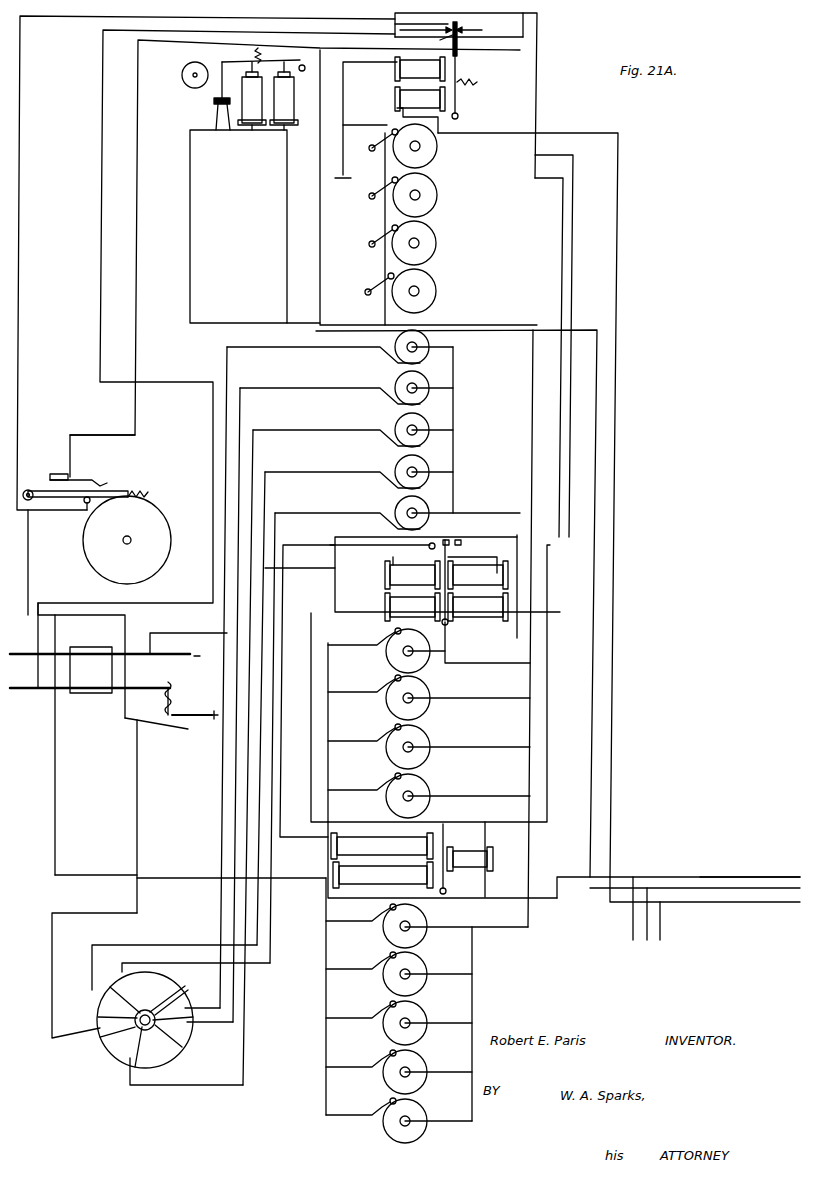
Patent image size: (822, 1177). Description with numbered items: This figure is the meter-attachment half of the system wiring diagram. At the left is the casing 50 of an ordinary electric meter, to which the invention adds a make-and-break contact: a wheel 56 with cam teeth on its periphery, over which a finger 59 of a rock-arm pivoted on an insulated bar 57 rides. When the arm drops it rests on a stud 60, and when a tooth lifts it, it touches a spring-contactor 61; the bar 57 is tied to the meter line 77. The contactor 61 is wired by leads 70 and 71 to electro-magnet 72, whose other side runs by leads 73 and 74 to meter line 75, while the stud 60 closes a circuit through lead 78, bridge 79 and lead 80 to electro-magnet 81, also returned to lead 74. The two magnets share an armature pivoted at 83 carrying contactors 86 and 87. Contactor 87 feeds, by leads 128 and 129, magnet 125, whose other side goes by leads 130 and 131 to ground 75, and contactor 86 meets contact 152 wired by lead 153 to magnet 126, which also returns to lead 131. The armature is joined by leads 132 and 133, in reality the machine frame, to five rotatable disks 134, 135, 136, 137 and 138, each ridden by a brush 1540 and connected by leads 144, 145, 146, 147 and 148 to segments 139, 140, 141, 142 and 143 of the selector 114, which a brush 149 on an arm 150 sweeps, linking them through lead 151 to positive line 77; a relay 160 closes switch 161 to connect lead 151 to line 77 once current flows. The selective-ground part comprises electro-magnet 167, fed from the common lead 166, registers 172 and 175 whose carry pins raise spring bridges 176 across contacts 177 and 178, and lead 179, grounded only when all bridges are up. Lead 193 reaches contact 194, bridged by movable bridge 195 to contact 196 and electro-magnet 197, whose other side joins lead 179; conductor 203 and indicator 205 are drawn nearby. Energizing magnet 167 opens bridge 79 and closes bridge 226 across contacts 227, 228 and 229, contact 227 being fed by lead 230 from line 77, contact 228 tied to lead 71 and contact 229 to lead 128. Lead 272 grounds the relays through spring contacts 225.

The casing of electric meter 50 is at (90, 693).
The wheel 56 is at (127, 537).
The insulated bar 57 is at (30, 488).
The finger 59 is at (130, 490).
The stud 60 is at (92, 503).
The spring-contactor 61 is at (88, 470).
The lead 70 is at (112, 432).
The lead 71 is at (540, 30).
The electro-magnet 72 is at (478, 589).
The lead 73 is at (513, 553).
The lead 74 is at (350, 570).
The meter line 75 is at (186, 656).
The meter line 77 is at (20, 690).
The lead 78 is at (18, 302).
The bridge 79 is at (479, 29).
The lead 80 is at (515, 153).
The electro-magnet 81 is at (412, 589).
The pivot 83 is at (449, 624).
The contactor 86 is at (447, 526).
The contactor 87 is at (458, 540).
The selector switch 114 is at (163, 1014).
The magnet 125 is at (470, 859).
The magnet 126 is at (442, 860).
The lead 128 is at (548, 720).
The lead 129 is at (530, 836).
The lead 130 is at (530, 882).
The lead 131 is at (270, 903).
The lead 132 is at (456, 420).
The lead 133 is at (455, 360).
The rotatable disk 134 is at (395, 505).
The rotatable disk 135 is at (395, 464).
The rotatable disk 136 is at (395, 422).
The rotatable disk 137 is at (395, 380).
The rotatable disk 138 is at (395, 338).
The segment 139 is at (132, 993).
The segment 140 is at (117, 1008).
The segment 141 is at (117, 1036).
The segment 142 is at (151, 1047).
The segment 143 is at (185, 1025).
The lead 144 is at (267, 950).
The lead 145 is at (267, 923).
The lead 146 is at (244, 1048).
The lead 147 is at (235, 997).
The lead 148 is at (220, 918).
The brush 149 is at (183, 990).
The arm 150 is at (168, 1002).
The lead 151 is at (80, 913).
The contact 152 is at (428, 548).
The lead 153 is at (300, 691).
The relay 160 is at (165, 680).
The switch 161 is at (165, 725).
The lead 166 is at (618, 203).
The electro-magnet 167 is at (395, 96).
The register 172 is at (432, 162).
The register 175 is at (437, 200).
The spring bridge piece 176 is at (380, 150).
The contact 177 is at (365, 195).
The contact 178 is at (362, 238).
The lead 179 is at (287, 243).
The lead 193 is at (190, 240).
The contact 194 is at (213, 120).
The movable bridge 195 is at (210, 106).
The contact 196 is at (226, 125).
The electro-magnet 197 is at (255, 108).
The conductor 203 is at (287, 48).
The indicator 205 is at (170, 85).
The spring contact 225 is at (375, 660).
The bridge 226 is at (395, 16).
The contact 227 is at (426, 28).
The contact 228 is at (462, 47).
The contact 229 is at (460, 58).
The lead 230 is at (103, 56).
The lead 272 is at (742, 877).
The brush 1540 is at (380, 400).